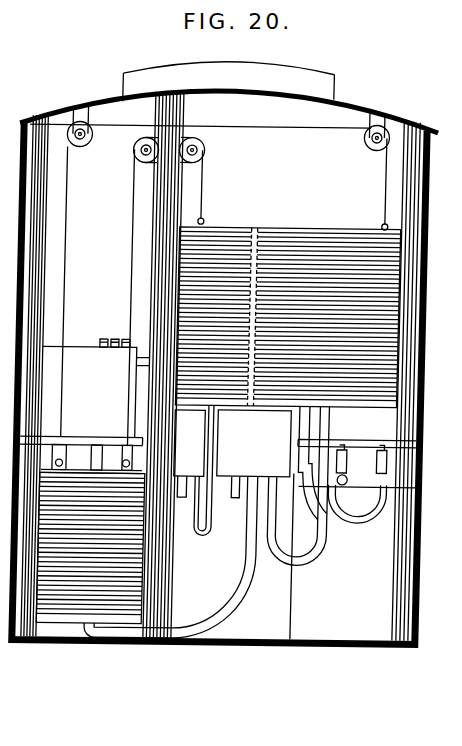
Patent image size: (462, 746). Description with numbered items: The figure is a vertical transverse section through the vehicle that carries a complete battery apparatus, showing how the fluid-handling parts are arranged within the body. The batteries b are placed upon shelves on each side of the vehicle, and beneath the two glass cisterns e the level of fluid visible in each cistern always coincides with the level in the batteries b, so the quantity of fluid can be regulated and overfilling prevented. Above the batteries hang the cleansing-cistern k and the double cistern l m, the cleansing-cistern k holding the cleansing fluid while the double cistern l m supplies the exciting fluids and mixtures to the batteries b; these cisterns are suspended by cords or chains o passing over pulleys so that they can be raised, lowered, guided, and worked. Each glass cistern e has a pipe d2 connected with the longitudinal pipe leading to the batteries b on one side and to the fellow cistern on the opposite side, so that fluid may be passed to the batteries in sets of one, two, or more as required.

The cords or chains o is at (224, 292).
The batteries b is at (206, 429).
The terminal bars c is at (217, 455).
The double cistern (first part) l is at (216, 316).
The double cistern (second part) m is at (325, 318).
The glass cisterns e is at (232, 453).
The cleansing-cistern k is at (90, 547).
The pipe d2 is at (343, 518).